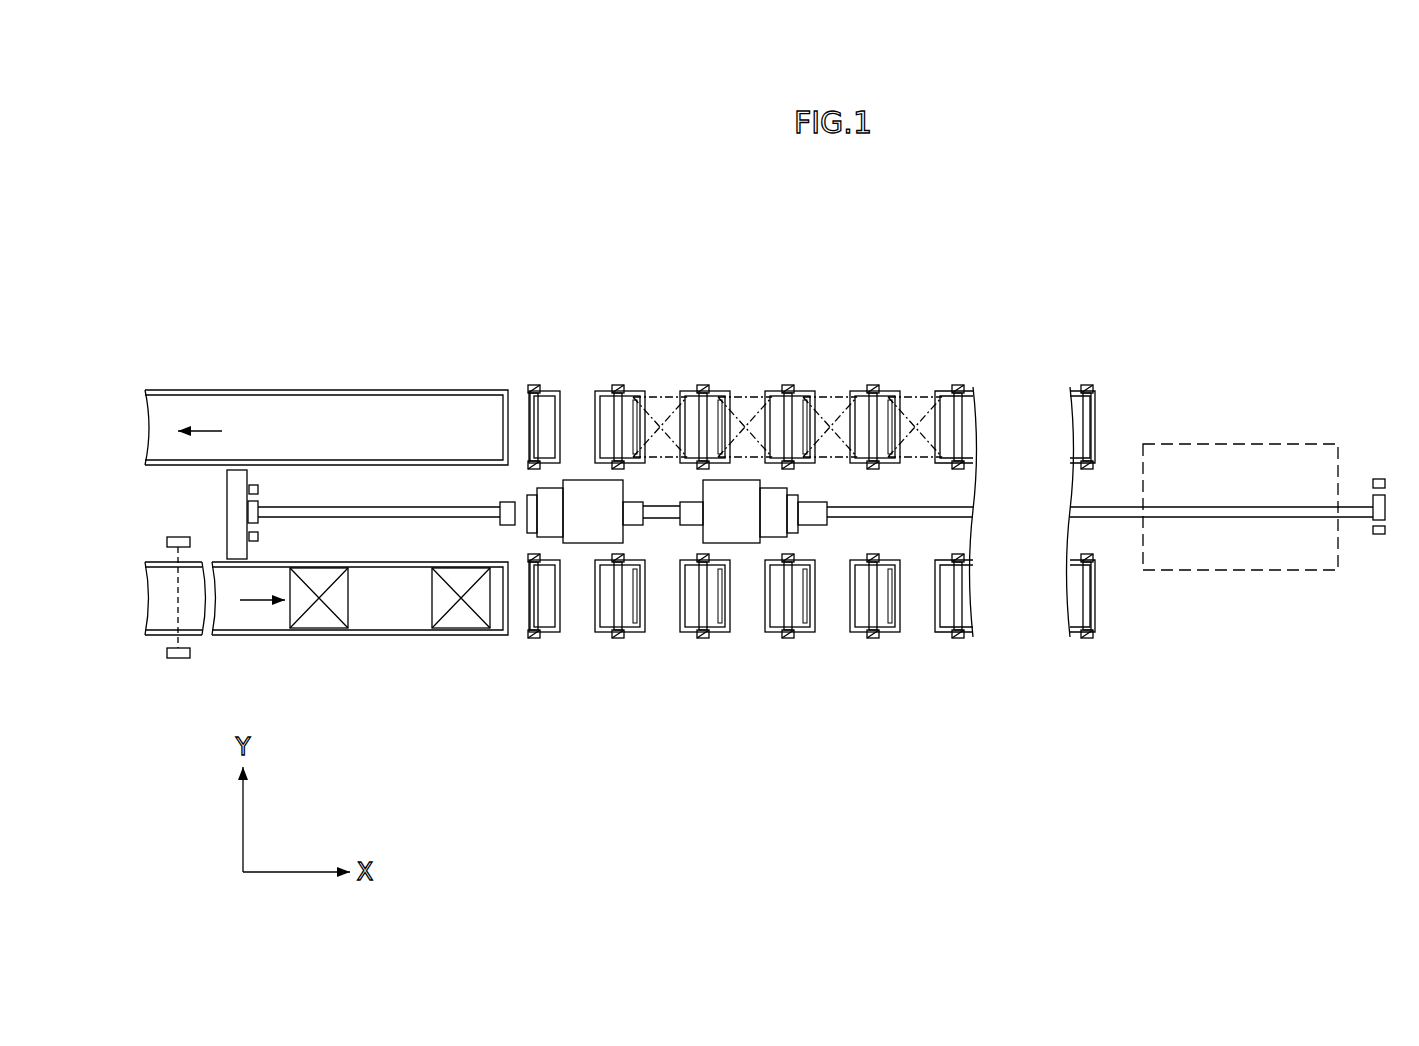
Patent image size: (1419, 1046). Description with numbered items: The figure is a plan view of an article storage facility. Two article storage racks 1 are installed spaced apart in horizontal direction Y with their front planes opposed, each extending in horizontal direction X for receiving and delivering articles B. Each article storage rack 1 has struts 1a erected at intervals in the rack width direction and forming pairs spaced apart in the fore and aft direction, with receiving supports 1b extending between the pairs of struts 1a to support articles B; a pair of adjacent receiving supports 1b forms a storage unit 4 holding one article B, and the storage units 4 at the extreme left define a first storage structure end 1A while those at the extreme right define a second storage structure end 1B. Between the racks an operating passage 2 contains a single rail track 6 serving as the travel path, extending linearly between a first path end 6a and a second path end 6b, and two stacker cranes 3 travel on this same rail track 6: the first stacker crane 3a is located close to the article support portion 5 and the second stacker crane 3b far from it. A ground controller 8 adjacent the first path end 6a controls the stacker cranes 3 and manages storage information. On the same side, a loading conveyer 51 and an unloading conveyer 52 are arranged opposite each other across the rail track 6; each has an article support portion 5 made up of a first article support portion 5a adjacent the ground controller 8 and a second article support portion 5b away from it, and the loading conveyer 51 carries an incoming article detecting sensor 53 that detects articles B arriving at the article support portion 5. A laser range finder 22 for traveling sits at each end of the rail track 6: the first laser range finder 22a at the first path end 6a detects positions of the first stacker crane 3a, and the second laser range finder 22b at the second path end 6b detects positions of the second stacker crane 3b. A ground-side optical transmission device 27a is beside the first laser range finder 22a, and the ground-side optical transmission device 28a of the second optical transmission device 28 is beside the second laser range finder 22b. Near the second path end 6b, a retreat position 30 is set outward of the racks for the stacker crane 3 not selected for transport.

The article storage rack 1 is at (811, 506).
The first storage structure end 1A is at (533, 372).
The second storage structure end 1B is at (1087, 372).
The strut 1a is at (535, 388).
The receiving support 1b is at (550, 430).
The operating passage 2 is at (820, 542).
The stacker crane 3 is at (675, 582).
The first stacker crane 3a is at (587, 535).
The second stacker crane 3b is at (743, 535).
The storage unit 4 is at (918, 388).
The article support portion 5 is at (330, 523).
The first article support portion 5a is at (327, 383).
The second article support portion 5b is at (447, 383).
The rail track 6 is at (380, 507).
The first path end 6a is at (258, 523).
The second path end 6b is at (1373, 510).
The ground controller 8 is at (237, 513).
The laser range finder for traveling 22 is at (777, 404).
The first laser range finder for traveling 22a is at (254, 484).
The second laser range finder for traveling 22b is at (1378, 478).
The optical transmission device on the ground 27a is at (252, 541).
The second optical transmission device 28 is at (1363, 591).
The optical transmission device on the ground 28a is at (1383, 535).
The retreat position 30 is at (1197, 444).
The loading conveyer 51 is at (410, 613).
The unloading conveyer 52 is at (375, 410).
The incoming article detecting sensor 53 is at (167, 537).
The article B is at (323, 578).